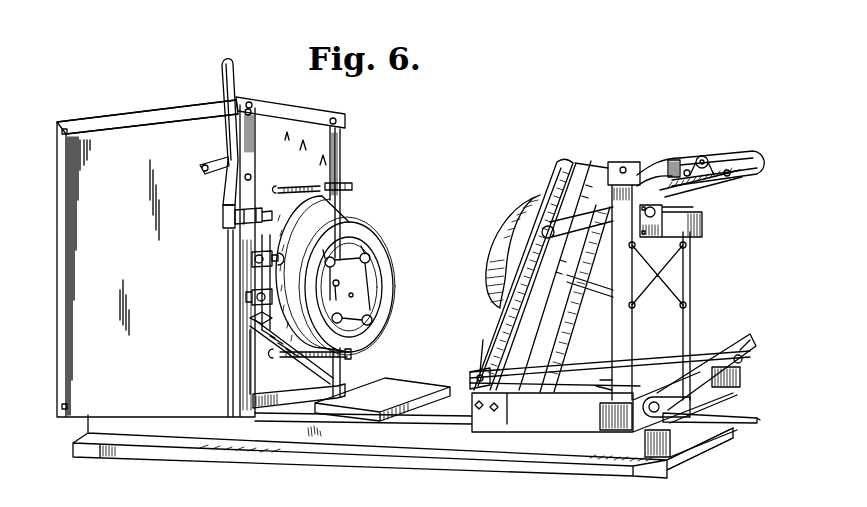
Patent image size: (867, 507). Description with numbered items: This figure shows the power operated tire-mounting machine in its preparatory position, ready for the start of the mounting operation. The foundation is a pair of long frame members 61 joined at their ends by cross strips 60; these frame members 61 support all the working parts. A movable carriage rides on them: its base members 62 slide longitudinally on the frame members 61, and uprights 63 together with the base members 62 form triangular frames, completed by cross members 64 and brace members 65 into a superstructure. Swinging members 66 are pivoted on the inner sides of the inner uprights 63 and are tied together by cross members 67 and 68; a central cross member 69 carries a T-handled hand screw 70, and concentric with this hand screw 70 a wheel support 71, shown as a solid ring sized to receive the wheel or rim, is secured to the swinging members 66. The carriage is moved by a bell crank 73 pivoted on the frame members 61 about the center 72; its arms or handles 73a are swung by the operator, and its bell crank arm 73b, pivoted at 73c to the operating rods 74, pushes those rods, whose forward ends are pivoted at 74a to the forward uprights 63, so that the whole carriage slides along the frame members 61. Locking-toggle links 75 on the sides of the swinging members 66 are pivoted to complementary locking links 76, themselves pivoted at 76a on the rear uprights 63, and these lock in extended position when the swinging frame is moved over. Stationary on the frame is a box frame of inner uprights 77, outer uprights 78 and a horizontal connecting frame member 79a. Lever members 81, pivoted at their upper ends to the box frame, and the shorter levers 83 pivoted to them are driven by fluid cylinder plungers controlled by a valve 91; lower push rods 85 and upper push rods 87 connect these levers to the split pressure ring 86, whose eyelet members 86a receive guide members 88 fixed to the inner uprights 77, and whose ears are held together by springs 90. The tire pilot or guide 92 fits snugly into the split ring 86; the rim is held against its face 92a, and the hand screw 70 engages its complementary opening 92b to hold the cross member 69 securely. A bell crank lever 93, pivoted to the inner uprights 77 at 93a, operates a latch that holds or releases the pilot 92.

The cross strips 60 is at (700, 452).
The frame members 61 is at (530, 445).
The base members 62 is at (570, 413).
The uprights 63 is at (685, 283).
The cross members 64 is at (688, 248).
The brace members 65 is at (686, 310).
The swinging members 66 is at (565, 162).
The cross member 67 is at (483, 335).
The cross member 68 is at (592, 175).
The cross member 69 is at (600, 380).
The hand screw 70 is at (613, 253).
The wheel support 71 is at (533, 197).
The center 72 is at (705, 408).
The bell crank 73 is at (679, 426).
The arms or handles 73a is at (748, 345).
The bell crank arm 73b is at (720, 390).
The pivot 73c is at (727, 360).
The operating rods 74 is at (648, 363).
The pivot connection 74a is at (473, 368).
The locking-toggle links 75 is at (663, 177).
The locking links 76 is at (717, 160).
The pivot 76a is at (693, 170).
The inner uprights 77 is at (327, 370).
The outer uprights 78 is at (60, 245).
The horizontal connecting frame member 79a is at (133, 122).
The lever members 81 is at (252, 317).
The shorter levers 83 is at (248, 213).
The lower push rods 85 is at (257, 322).
The split pressure ring 86 is at (258, 247).
The eyelet members 86a is at (247, 305).
The upper push rods 87 is at (297, 192).
The guide members 88 is at (253, 280).
The springs 90 is at (343, 188).
The valve 91 is at (274, 104).
The tire pilot or guide 92 is at (342, 180).
The face 92a is at (315, 258).
The complementary opening 92b is at (336, 287).
The bell crank lever 93 is at (233, 84).
The pivot 93a is at (252, 200).